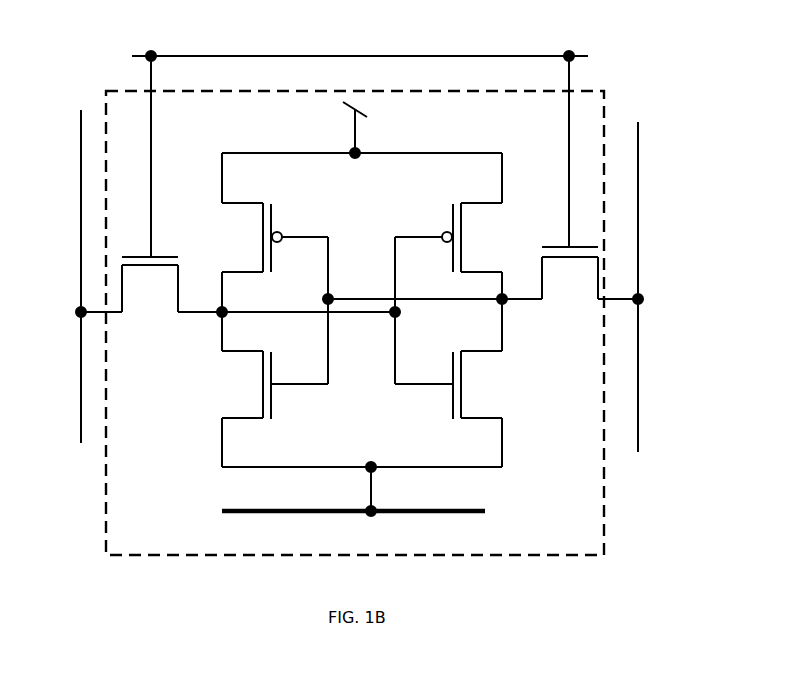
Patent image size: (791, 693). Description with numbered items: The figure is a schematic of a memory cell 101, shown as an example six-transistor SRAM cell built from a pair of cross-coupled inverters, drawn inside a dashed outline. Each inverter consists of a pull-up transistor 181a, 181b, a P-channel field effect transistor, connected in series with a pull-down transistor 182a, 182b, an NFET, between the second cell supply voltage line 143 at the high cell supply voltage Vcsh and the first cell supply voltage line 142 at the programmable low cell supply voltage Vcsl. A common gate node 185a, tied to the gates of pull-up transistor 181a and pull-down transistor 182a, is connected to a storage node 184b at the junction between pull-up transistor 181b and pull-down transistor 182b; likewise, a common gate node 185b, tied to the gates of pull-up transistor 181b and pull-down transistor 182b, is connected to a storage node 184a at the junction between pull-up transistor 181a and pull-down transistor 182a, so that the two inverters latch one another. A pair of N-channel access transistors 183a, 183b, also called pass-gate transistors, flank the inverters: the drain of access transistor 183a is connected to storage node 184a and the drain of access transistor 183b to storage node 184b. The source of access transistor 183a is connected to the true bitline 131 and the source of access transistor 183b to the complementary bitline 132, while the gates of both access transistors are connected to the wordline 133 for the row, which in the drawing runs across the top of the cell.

The memory cell 101 is at (506, 131).
The bitline 131 is at (80, 373).
The bitline 132 is at (640, 397).
The wordline 133 is at (248, 52).
The first cell supply voltage line 142 is at (437, 514).
The second cell supply voltage line 143 is at (349, 108).
The pull-up transistor 181a is at (283, 224).
The pull-up transistor 181b is at (433, 227).
The pull-down transistor 182a is at (300, 347).
The pull-down transistor 182b is at (457, 373).
The access transistor 183a is at (165, 246).
The access transistor 183b is at (552, 238).
The storage node 184a is at (223, 307).
The storage node 184b is at (498, 304).
The common gate node 185a is at (332, 295).
The common gate node 185b is at (389, 321).